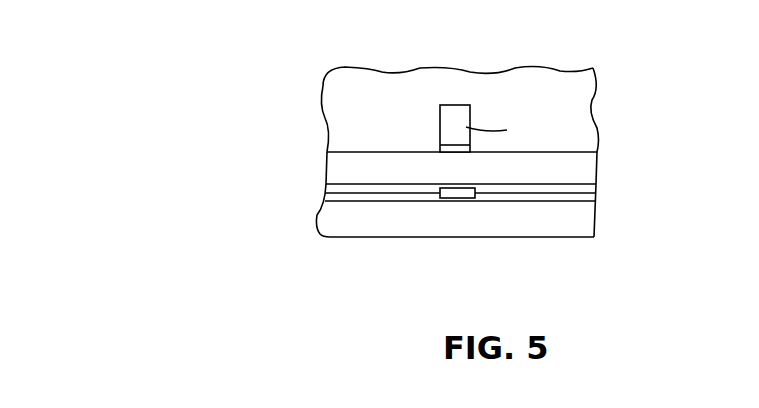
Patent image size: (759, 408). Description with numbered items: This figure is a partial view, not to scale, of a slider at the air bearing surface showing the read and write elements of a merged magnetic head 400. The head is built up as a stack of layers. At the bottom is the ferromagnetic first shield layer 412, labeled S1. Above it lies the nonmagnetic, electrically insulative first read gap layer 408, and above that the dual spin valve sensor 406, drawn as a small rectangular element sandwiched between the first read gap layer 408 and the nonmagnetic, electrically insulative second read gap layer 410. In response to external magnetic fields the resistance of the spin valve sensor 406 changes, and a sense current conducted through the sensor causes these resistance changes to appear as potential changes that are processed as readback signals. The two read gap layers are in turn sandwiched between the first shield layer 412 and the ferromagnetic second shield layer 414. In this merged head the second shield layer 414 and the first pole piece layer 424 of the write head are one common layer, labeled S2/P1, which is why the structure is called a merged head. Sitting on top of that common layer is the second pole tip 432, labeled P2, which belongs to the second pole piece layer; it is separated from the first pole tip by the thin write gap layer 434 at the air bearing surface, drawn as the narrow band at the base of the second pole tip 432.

The merged magnetic head 400 is at (616, 81).
The dual spin valve sensor 406 is at (460, 199).
The first read gap layer 408 is at (378, 202).
The second read gap layer 410 is at (562, 185).
The first shield layer 412 is at (585, 220).
The second shield layer 414 is at (398, 168).
The first pole piece layer 424 is at (328, 166).
The second pole tip 432 is at (454, 82).
The write gap layer 434 is at (455, 142).